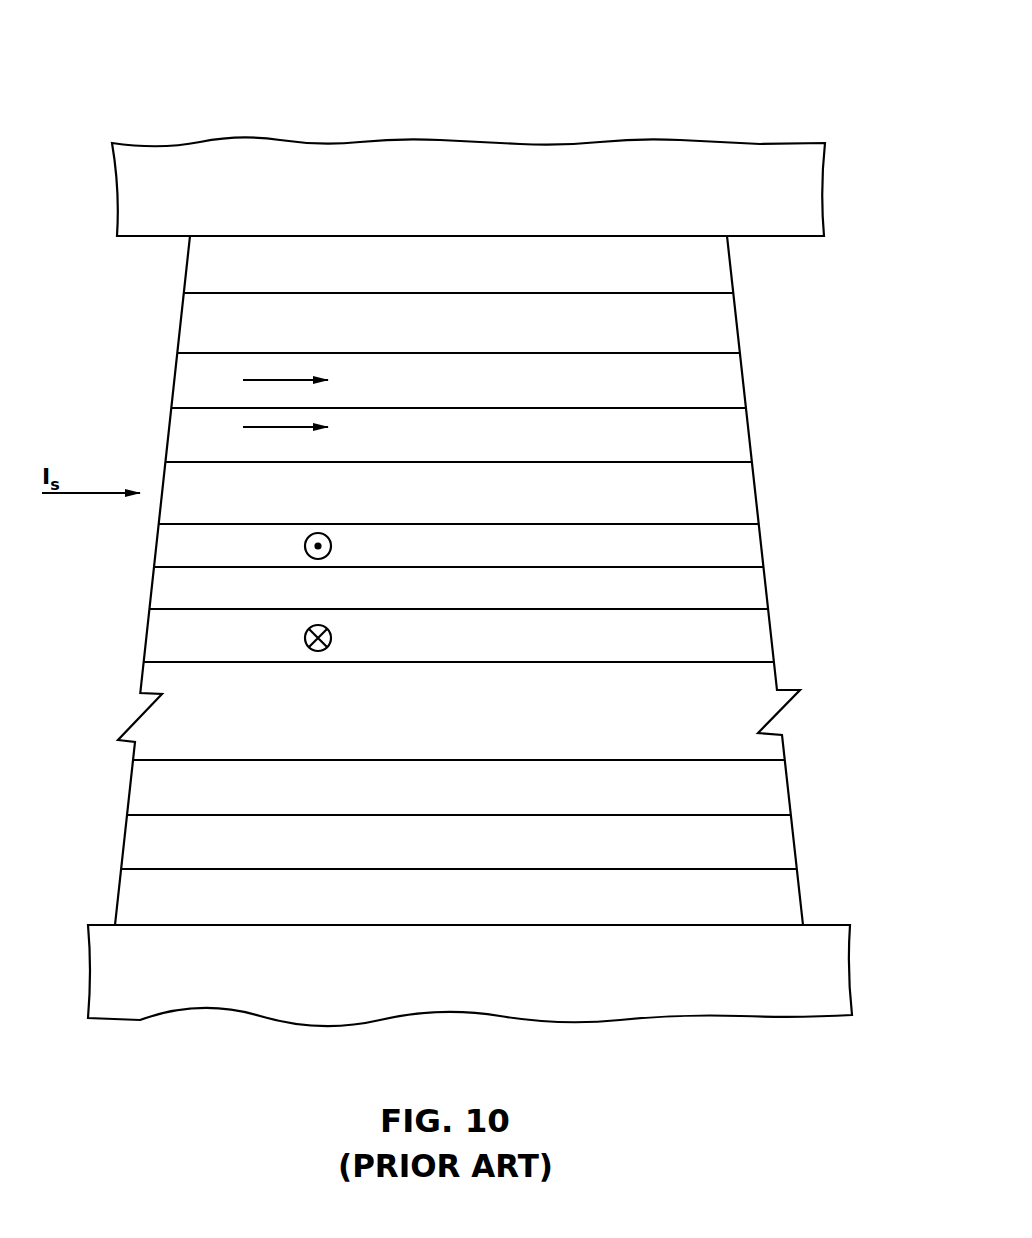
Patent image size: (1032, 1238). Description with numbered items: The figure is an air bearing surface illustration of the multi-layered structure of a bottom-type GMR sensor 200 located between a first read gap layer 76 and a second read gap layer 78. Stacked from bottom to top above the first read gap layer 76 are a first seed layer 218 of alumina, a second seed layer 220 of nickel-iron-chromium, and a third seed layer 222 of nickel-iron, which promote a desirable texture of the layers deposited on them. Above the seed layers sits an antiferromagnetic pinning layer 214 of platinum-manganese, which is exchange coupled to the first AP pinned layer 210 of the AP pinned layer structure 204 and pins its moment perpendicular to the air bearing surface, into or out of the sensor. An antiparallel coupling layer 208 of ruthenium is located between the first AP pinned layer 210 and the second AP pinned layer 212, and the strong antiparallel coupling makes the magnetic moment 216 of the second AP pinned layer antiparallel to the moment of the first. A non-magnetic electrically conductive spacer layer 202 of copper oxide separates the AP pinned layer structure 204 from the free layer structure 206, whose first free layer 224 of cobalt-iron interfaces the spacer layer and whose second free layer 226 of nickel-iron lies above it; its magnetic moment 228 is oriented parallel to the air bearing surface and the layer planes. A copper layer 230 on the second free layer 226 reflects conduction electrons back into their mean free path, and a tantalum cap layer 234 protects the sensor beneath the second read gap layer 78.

The GMR sensor 200 is at (30, 925).
The free layer structure 206 is at (75, 462).
The antiparallel pinned layer structure 204 is at (58, 524).
The second read gap layer 78 is at (802, 178).
The first read gap layer 76 is at (751, 1000).
The cap layer 234 is at (733, 268).
The copper layer 230 is at (738, 320).
The second free layer 226 is at (742, 378).
The first free layer 224 is at (750, 430).
The magnetic moment of free layer structure 228 is at (283, 426).
The spacer layer 202 is at (756, 482).
The second AP pinned layer 212 is at (763, 540).
The magnetic moment of second AP pinned layer 216 is at (305, 546).
The antiparallel coupling layer 208 is at (769, 590).
The first AP pinned layer 210 is at (775, 638).
The antiferromagnetic pinning layer 214 is at (305, 638).
The third seed layer 222 is at (789, 782).
The second seed layer 220 is at (795, 840).
The first seed layer 218 is at (800, 897).